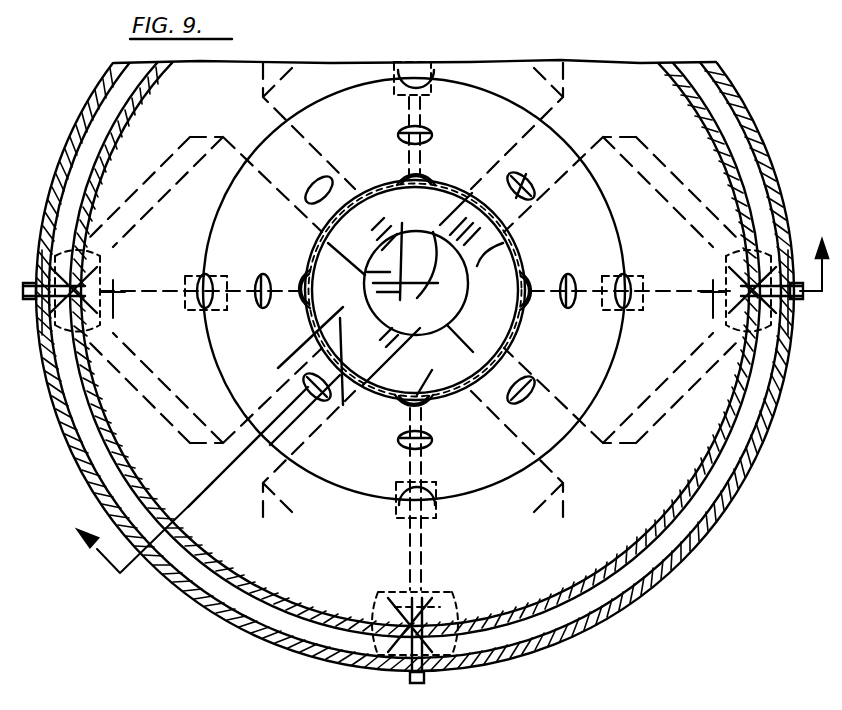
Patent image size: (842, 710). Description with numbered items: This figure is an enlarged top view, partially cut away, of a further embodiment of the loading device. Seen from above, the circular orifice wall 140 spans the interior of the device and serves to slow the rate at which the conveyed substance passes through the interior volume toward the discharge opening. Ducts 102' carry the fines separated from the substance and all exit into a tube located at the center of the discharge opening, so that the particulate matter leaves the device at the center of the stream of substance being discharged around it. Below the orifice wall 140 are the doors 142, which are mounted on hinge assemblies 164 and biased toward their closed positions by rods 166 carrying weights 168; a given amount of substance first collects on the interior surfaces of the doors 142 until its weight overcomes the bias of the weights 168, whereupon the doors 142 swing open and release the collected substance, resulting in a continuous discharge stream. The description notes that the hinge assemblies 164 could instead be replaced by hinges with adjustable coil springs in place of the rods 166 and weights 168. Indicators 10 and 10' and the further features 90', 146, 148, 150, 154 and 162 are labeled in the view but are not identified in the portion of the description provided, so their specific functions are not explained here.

The section line 10- 10 is at (445, 391).
The wheel assembly section 10' is at (442, 37).
The inner rim band 90' is at (429, 318).
The ducts 102' is at (435, 283).
The orifice wall 140 is at (475, 108).
The doors 142 is at (415, 299).
The key lines 146 is at (265, 420).
The pin 148 is at (400, 242).
The rim 150 is at (155, 114).
The bolt holes 154 is at (511, 173).
The outer rim band 162 is at (709, 528).
The hinge assemblies 164 is at (184, 264).
The rods 166 is at (240, 275).
The weights 168 is at (112, 322).